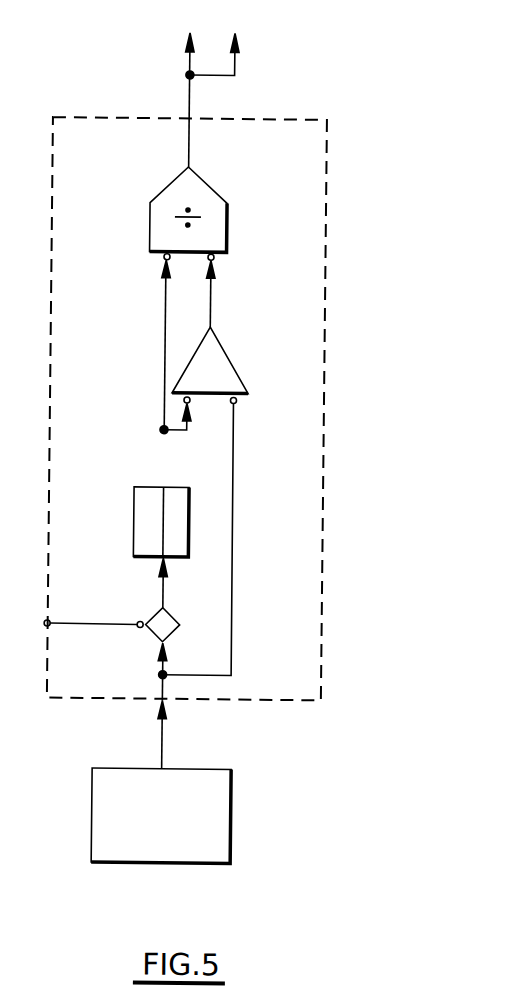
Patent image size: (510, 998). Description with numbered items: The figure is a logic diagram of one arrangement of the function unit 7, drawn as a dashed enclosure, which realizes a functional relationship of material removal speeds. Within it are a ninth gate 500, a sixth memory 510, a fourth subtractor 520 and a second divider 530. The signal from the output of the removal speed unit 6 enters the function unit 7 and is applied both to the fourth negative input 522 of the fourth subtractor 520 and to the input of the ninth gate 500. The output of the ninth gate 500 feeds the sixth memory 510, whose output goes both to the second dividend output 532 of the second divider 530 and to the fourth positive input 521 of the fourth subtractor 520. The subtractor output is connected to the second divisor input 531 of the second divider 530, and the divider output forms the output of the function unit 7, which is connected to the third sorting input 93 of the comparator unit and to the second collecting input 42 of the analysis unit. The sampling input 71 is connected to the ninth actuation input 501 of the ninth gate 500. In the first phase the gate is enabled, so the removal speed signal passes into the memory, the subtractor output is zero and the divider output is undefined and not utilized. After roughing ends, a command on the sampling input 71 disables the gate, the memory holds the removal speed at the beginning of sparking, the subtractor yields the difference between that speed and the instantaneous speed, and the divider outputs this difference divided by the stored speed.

The function unit 7 is at (324, 262).
The second collecting input 42 is at (188, 85).
The third sorting input 93 is at (223, 39).
The second divider 530 is at (223, 199).
The second divisor input 531 is at (231, 291).
The second dividend output 532 is at (142, 341).
The fourth subtractor 520 is at (232, 362).
The fourth positive input 521 is at (195, 416).
The fourth negative input 522 is at (223, 536).
The sixth memory 510 is at (161, 522).
The ninth gate 500 is at (176, 617).
The ninth actuation input 501 is at (97, 609).
The sampling input 71 is at (30, 623).
The removal speed unit 6 is at (161, 768).